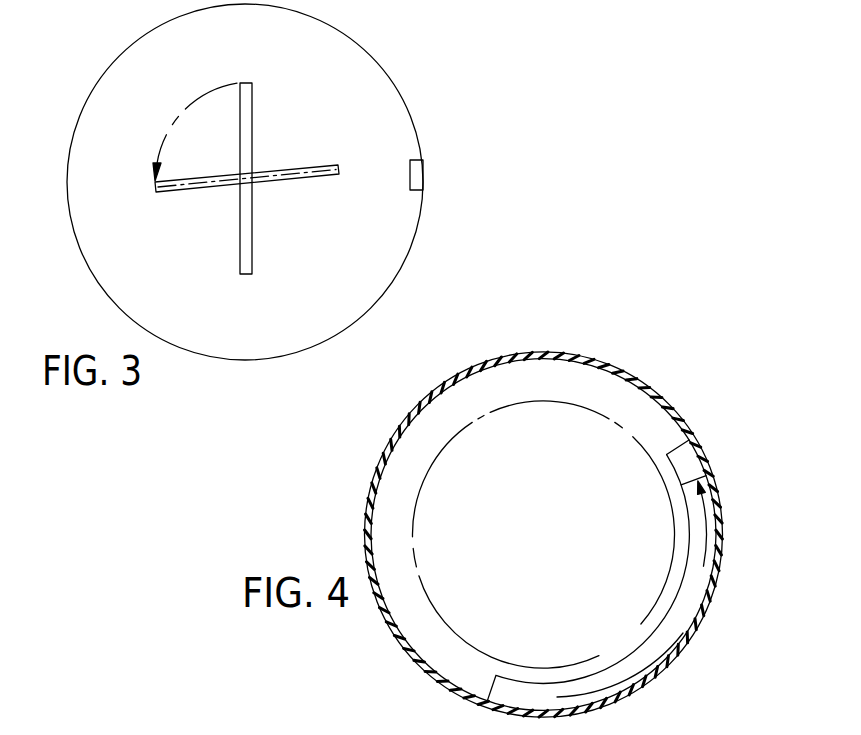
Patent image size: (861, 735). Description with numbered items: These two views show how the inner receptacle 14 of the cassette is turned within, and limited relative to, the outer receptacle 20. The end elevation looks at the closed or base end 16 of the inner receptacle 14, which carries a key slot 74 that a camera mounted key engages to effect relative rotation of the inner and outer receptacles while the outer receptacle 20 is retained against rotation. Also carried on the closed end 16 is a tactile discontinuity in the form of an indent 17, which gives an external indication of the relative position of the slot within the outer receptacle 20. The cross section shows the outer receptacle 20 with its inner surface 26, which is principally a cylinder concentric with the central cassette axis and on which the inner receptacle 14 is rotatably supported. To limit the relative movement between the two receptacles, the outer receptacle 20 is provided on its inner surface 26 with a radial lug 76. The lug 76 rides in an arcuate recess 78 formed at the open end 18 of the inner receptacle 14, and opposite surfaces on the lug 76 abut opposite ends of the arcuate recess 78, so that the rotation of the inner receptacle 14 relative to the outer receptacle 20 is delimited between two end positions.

In FIG. 3, the inner receptacle 14 is at (402, 89).
In FIG. 3, the key slot 74 is at (250, 128).
In FIG. 3, the indent 17 is at (418, 177).
In FIG. 3, the closed end 16 is at (355, 262).
In FIG. 4, the outer receptacle 20 is at (568, 351).
In FIG. 4, the inner surface 26 is at (718, 518).
In FIG. 4, the open end 18 is at (612, 390).
In FIG. 4, the arcuate recess 78 is at (694, 600).
In FIG. 4, the radial lug 76 is at (688, 463).